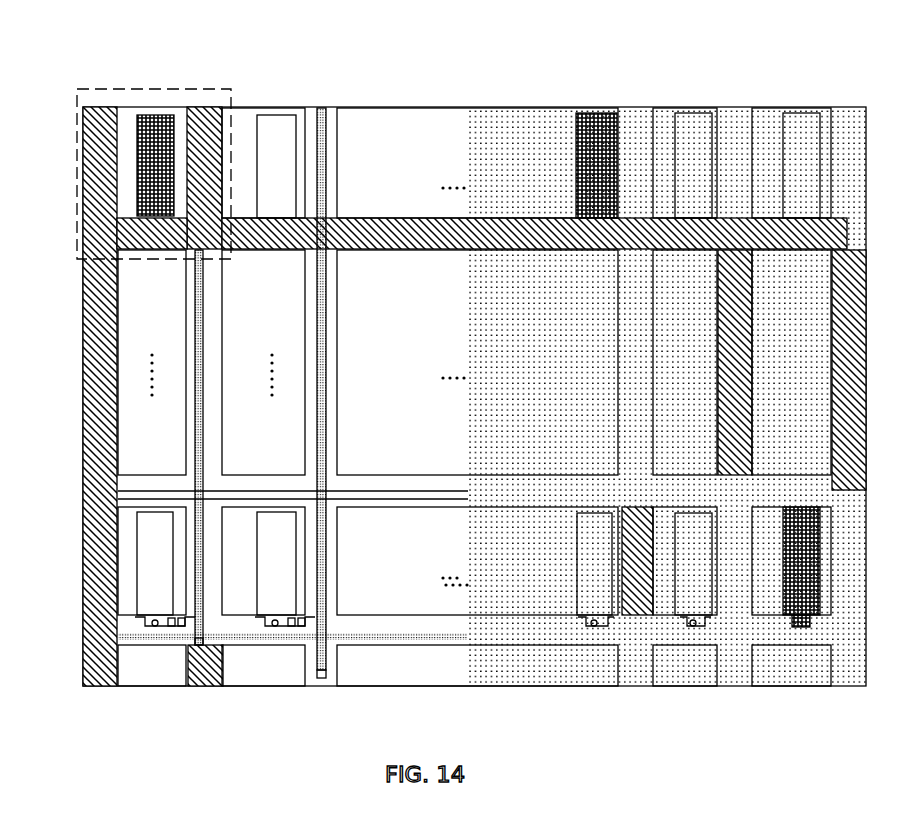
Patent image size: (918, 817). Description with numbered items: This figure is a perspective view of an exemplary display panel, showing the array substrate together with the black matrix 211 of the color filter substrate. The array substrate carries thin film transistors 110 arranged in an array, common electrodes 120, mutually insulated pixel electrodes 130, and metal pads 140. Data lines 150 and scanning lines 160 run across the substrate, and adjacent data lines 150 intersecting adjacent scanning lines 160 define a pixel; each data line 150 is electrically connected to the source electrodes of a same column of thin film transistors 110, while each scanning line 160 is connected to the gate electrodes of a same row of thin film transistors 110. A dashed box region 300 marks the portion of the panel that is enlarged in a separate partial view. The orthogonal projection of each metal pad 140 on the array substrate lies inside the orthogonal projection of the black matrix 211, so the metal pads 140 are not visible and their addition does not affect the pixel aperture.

The dashed box region 300 is at (123, 89).
The common electrode 120 is at (172, 112).
The pixel electrode 130 is at (138, 136).
The metal pad 140 is at (138, 228).
The thin film transistor 110 is at (184, 216).
The black matrix 211 is at (97, 300).
The data line 150 is at (322, 108).
The scanning line 160 is at (368, 239).